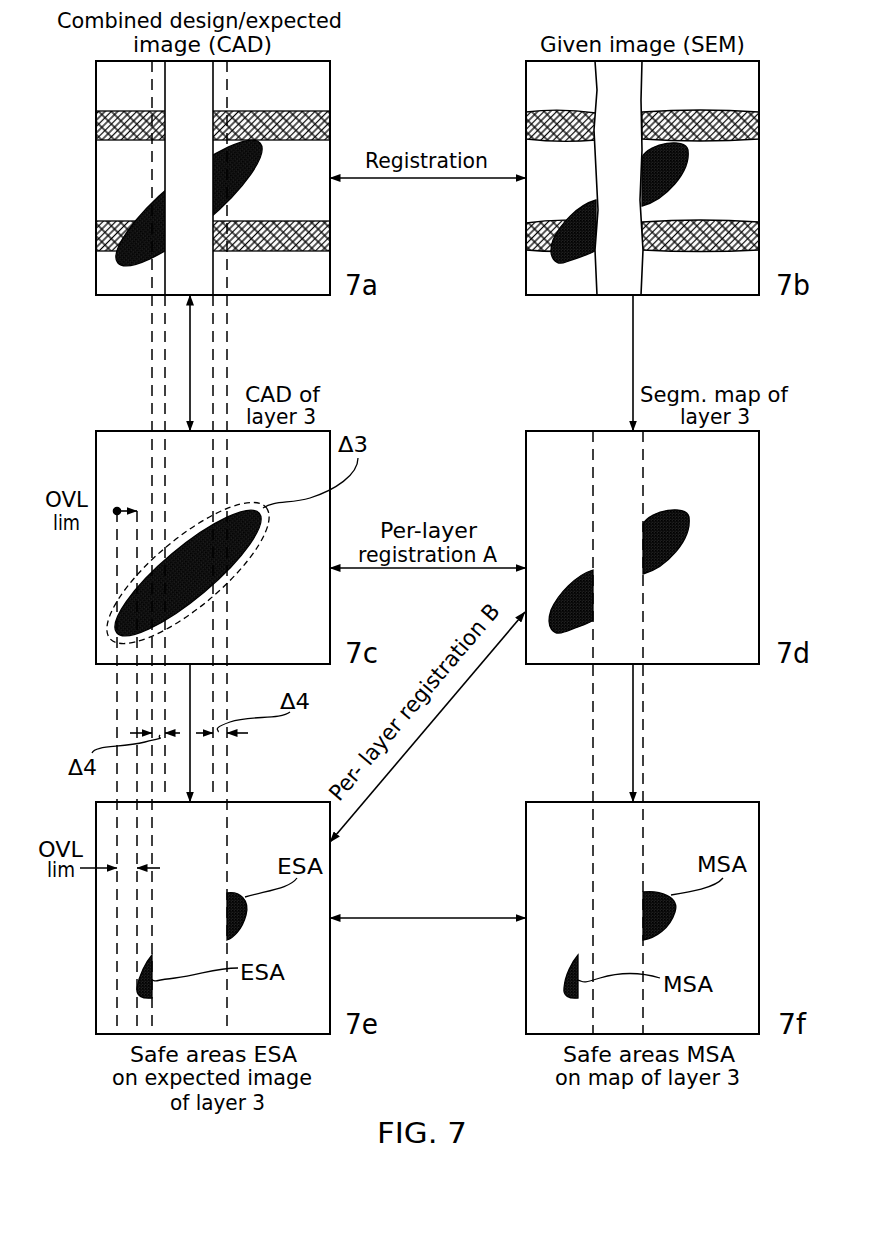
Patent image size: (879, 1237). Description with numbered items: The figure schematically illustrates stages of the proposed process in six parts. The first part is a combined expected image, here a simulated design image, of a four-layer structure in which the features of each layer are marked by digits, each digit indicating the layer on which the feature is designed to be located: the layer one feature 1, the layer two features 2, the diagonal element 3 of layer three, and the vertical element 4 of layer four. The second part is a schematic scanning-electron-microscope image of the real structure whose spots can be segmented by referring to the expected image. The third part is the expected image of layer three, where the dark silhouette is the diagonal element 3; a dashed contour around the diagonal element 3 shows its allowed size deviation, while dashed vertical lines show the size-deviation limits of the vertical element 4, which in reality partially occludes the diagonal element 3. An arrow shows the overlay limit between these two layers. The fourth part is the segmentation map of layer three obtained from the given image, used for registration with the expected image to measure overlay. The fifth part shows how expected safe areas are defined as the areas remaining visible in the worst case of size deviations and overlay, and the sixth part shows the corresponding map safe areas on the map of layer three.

The layer 1 feature 1 is at (108, 72).
The layer 2 feature 2 is at (100, 122).
The diagonal element of layer 3 is at (230, 152).
The vertical element of layer 4 is at (162, 80).